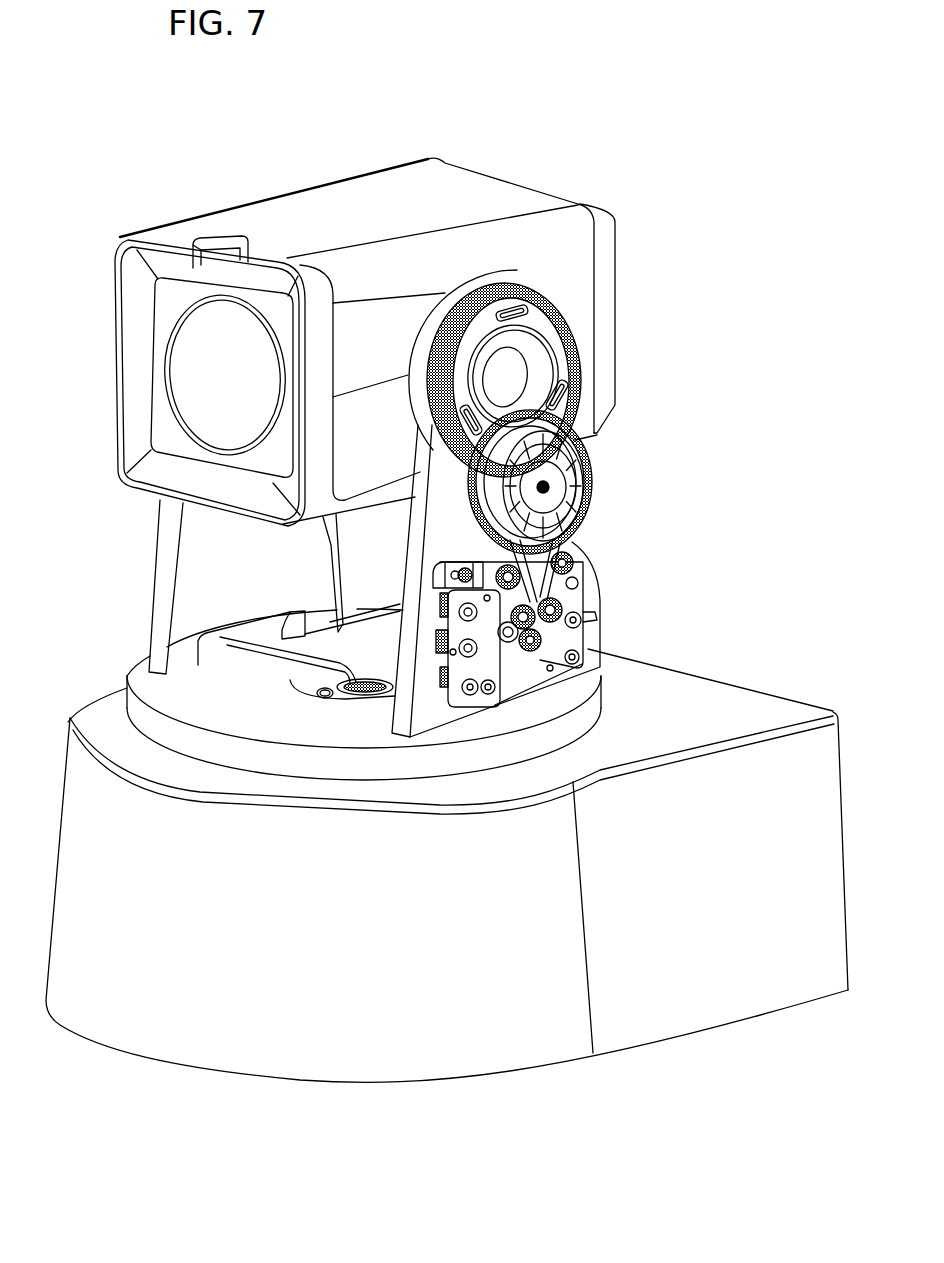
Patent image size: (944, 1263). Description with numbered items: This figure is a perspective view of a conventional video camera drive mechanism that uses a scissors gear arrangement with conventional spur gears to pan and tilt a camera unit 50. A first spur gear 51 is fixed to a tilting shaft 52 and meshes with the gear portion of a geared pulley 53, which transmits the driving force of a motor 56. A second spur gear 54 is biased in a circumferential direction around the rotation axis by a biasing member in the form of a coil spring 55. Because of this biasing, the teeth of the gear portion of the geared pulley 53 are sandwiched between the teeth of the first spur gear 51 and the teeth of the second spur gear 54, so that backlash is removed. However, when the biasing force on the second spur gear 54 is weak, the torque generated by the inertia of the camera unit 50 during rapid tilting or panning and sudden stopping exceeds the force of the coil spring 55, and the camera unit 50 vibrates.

The camera unit 50 is at (195, 500).
The first spur gear 51 is at (513, 270).
The tilting shaft 52 is at (513, 372).
The geared pulley 53 is at (575, 510).
The second spur gear 54 is at (553, 318).
The coil spring 55 is at (492, 338).
The motor 56 is at (588, 668).